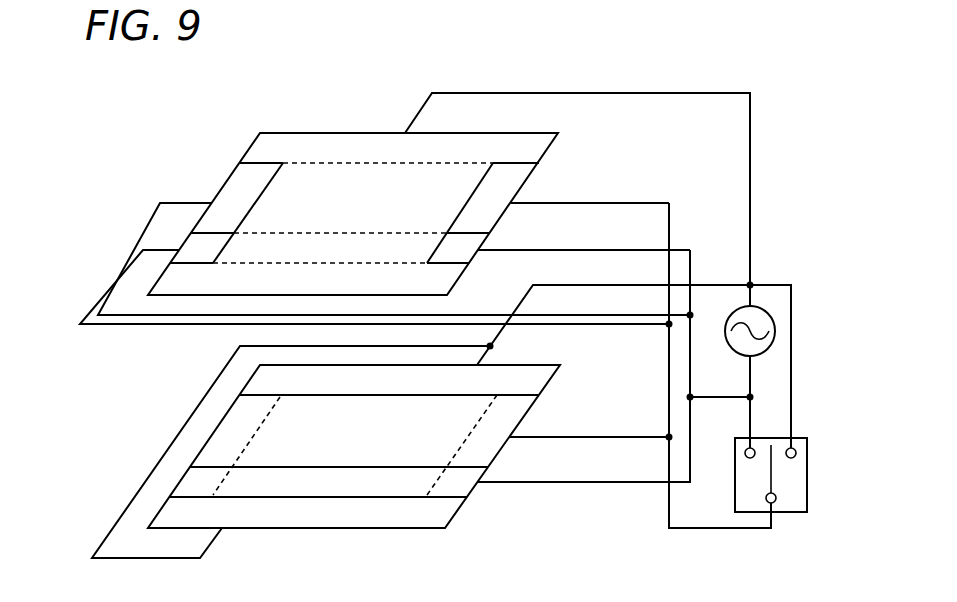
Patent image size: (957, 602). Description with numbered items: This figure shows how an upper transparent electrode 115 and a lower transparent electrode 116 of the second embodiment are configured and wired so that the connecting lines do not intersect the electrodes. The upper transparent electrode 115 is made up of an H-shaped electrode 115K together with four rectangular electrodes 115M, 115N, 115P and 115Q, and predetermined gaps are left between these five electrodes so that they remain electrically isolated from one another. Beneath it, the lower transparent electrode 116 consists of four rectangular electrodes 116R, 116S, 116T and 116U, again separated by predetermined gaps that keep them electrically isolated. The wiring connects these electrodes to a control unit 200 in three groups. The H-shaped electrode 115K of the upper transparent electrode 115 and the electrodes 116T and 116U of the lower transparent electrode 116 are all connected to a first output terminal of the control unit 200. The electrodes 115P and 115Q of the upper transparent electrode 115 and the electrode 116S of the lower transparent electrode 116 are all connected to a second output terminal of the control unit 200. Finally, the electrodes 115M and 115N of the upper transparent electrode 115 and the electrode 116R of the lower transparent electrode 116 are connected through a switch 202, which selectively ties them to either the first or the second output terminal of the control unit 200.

The upper transparent electrode 115 is at (217, 172).
The H-shaped electrode 115K is at (302, 145).
The rectangular electrode 115M is at (227, 195).
The rectangular electrode 115N is at (507, 183).
The rectangular electrode 115P is at (190, 245).
The rectangular electrode 115Q is at (468, 255).
The lower transparent electrode 116 is at (480, 492).
The rectangular electrode 116T is at (517, 370).
The rectangular electrode 116R is at (237, 428).
The rectangular electrode 116S is at (195, 483).
The rectangular electrode 116U is at (330, 518).
The control unit 200 is at (765, 303).
The switch 202 is at (808, 453).